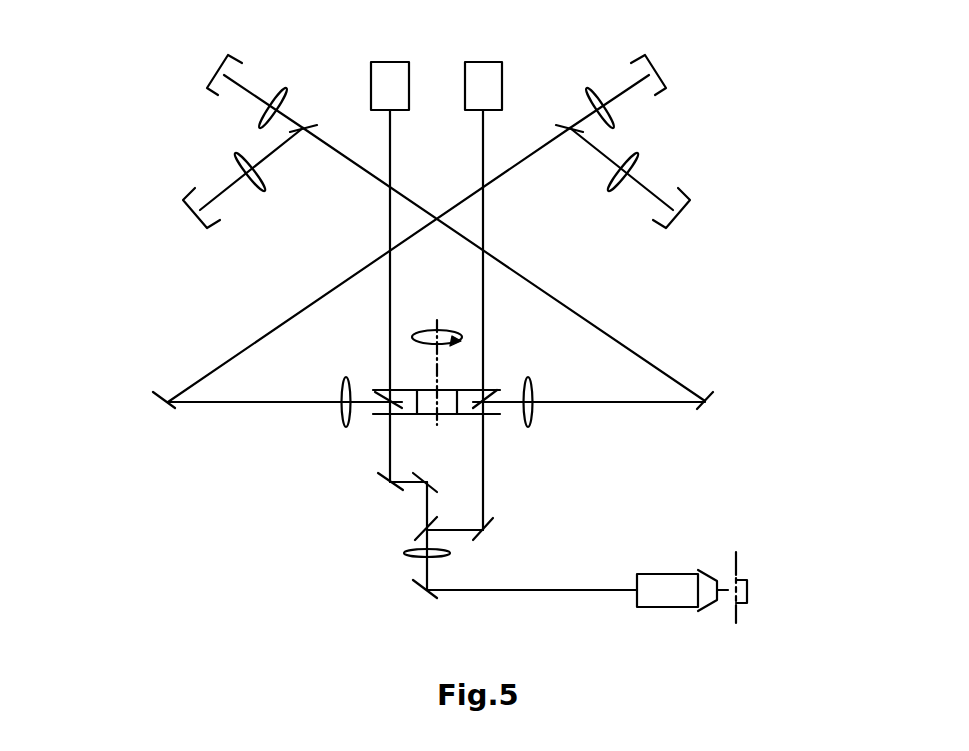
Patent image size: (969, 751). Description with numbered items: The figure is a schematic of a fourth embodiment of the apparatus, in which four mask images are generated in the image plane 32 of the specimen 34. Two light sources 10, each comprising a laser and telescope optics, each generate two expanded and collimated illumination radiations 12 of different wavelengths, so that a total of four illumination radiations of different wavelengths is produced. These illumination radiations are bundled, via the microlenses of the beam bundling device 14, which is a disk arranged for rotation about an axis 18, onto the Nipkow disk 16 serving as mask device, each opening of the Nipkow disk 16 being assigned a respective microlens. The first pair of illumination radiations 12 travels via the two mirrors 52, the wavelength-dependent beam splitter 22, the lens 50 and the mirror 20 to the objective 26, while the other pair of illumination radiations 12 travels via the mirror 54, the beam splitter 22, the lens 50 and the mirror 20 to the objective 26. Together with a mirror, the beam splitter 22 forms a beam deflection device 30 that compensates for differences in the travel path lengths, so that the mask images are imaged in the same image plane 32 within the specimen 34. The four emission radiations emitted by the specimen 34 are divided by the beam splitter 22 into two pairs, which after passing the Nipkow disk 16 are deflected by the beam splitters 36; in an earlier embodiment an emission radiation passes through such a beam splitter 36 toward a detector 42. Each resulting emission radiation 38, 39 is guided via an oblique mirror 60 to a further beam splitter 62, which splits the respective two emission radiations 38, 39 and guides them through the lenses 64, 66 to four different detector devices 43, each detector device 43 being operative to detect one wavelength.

The light source 10 is at (378, 90).
The illumination radiation 12 is at (388, 157).
The beam bundling device 14 is at (472, 390).
The Nipkow disk 16 is at (407, 416).
The axis 18 is at (450, 330).
The mirror 20 is at (437, 598).
The beam splitter 22 is at (417, 539).
The objective 26 is at (653, 597).
The beam deflection device 30 is at (380, 550).
The image plane 32 is at (740, 563).
The specimen 34 is at (750, 593).
The beam splitter 36 is at (397, 392).
The emission radiation 38 is at (253, 407).
The emission radiation 39 is at (303, 407).
The detector 42 is at (137, 122).
The detector device 43 is at (220, 63).
The lens 50 is at (450, 553).
The mirror 52 is at (387, 475).
The mirror 54 is at (488, 528).
The oblique mirror 60 is at (160, 410).
The beam splitter 62 is at (307, 132).
The lens 64 is at (260, 118).
The lens 66 is at (236, 159).